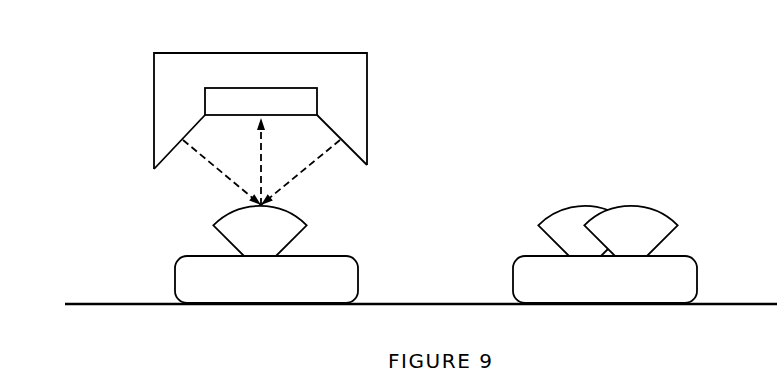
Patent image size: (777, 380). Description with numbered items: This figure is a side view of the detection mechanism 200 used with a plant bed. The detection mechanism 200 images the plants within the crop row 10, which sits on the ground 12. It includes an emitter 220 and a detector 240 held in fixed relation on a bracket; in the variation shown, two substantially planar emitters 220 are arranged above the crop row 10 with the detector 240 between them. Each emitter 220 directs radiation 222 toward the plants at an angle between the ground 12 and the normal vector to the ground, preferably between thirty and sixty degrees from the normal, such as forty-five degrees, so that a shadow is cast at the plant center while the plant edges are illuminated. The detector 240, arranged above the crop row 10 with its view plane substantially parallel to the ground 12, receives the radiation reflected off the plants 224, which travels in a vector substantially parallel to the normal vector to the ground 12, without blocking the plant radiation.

The detection mechanism 200 is at (128, 33).
The detector 240 is at (205, 97).
The emitter 220 is at (172, 135).
The radiation 222 is at (297, 192).
The radiation reflected off the plants 224 is at (272, 144).
The crop row 10 is at (187, 213).
The ground 12 is at (187, 258).